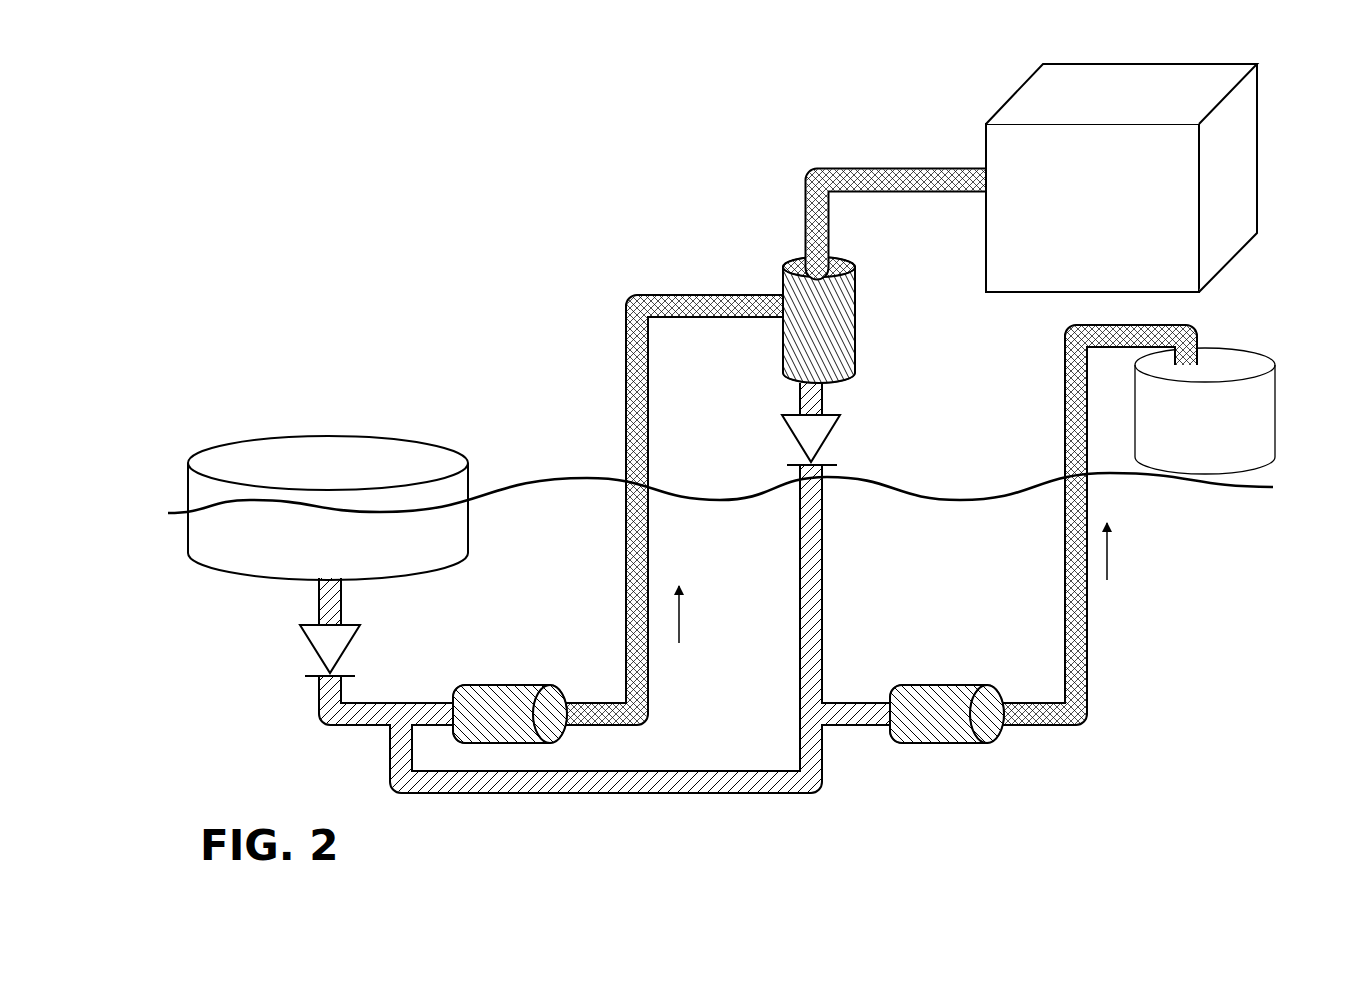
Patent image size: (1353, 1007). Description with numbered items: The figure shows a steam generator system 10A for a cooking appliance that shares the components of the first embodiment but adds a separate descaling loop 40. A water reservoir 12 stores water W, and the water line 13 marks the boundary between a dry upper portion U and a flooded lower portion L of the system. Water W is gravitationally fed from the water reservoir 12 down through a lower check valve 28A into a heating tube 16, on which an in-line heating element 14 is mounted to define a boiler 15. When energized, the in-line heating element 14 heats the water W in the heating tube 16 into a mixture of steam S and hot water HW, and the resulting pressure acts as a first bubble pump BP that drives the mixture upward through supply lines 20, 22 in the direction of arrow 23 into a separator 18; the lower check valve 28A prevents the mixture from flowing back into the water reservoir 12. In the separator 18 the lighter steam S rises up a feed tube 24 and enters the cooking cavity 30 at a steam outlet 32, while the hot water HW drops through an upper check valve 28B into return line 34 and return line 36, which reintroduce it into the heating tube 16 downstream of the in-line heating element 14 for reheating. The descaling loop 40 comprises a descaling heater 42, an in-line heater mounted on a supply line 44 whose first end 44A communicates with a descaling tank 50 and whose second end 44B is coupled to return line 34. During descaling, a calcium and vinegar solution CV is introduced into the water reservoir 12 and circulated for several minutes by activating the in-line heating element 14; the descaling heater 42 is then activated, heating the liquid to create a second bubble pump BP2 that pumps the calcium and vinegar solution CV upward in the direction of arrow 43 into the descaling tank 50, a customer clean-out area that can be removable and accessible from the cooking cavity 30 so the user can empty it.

The steam generator system 10A is at (480, 298).
The water reservoir 12 is at (237, 440).
The water line 13 is at (530, 483).
The in-line heating element 14 is at (478, 685).
The boiler 15 is at (536, 678).
The heating tube 16 is at (345, 735).
The separator 18 is at (855, 340).
The supply line 20 is at (625, 395).
The supply line 22 is at (708, 317).
The arrow 23 is at (680, 620).
The feed tube 24 is at (880, 166).
The lower check valve 28A is at (313, 647).
The upper check valve 28B is at (830, 437).
The cooking cavity 30 is at (1110, 90).
The steam outlet 32 is at (983, 167).
The return line 34 is at (822, 640).
The return line 36 is at (552, 793).
The descaling loop 40 is at (1126, 614).
The descaling heater 42 is at (947, 743).
The arrow 43 is at (1108, 558).
The supply line 44 is at (1043, 728).
The first end 44A is at (1187, 335).
The second end 44B is at (827, 715).
The descaling tank 50 is at (1237, 365).
The calcium and vinegar solution CV is at (321, 427).
The water W is at (348, 460).
The steam S is at (820, 218).
The hot water HW is at (638, 433).
The first bubble pump BP is at (635, 663).
The second bubble pump BP2 is at (1083, 677).
The upper portion U is at (583, 515).
The lower portion L is at (583, 450).